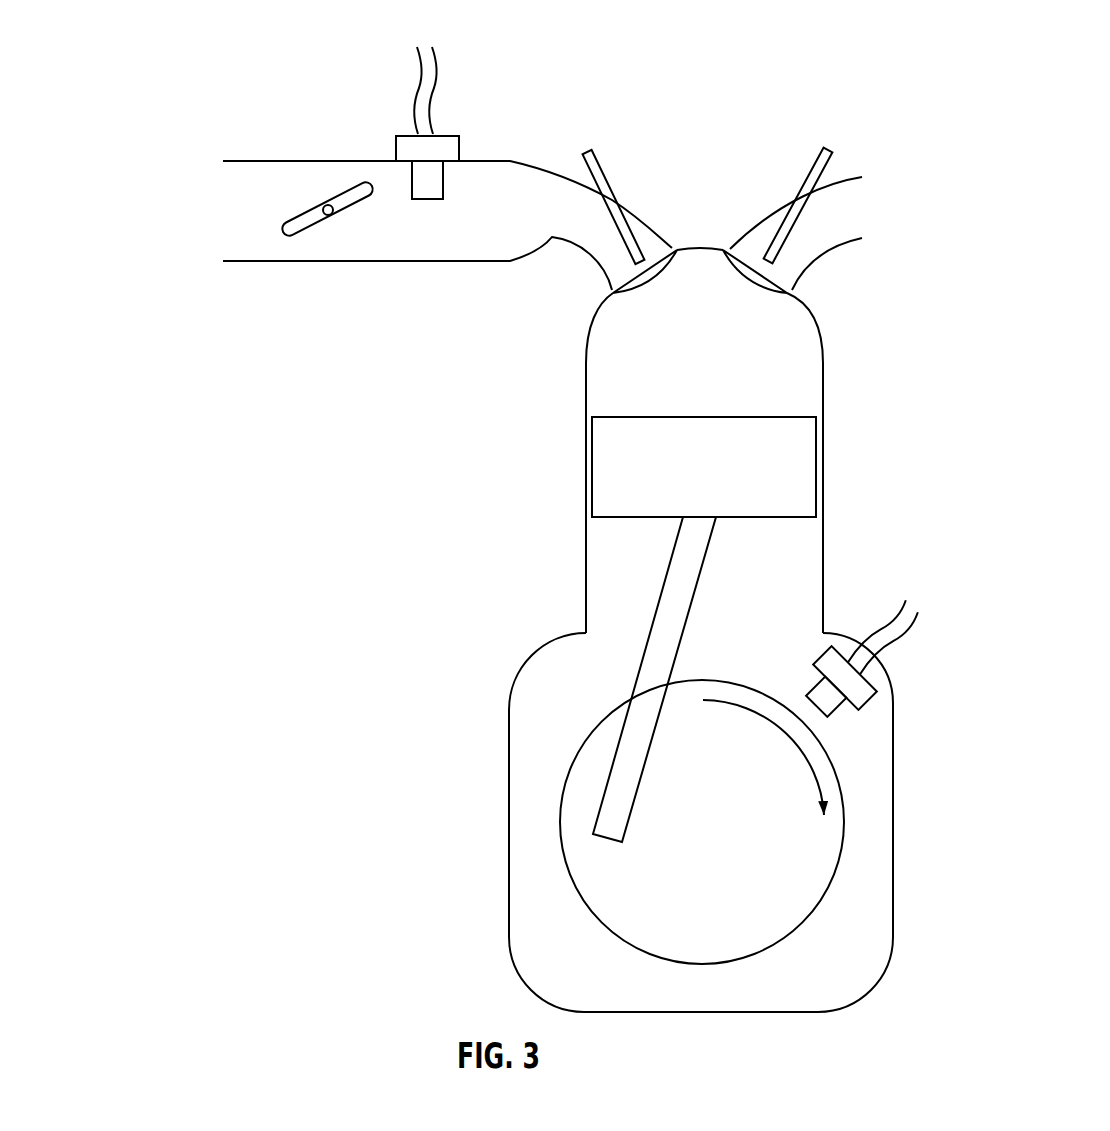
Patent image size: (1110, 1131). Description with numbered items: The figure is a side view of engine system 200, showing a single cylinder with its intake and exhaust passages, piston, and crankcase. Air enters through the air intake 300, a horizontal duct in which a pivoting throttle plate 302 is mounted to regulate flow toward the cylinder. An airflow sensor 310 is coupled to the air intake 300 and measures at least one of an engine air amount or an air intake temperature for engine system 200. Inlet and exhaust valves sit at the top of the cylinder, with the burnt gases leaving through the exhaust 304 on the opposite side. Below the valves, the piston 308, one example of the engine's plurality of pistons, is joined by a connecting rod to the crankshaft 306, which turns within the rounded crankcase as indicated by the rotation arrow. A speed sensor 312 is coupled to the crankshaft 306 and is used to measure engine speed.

The air intake 300 is at (167, 120).
The engine system 200 is at (692, 107).
The throttle plate 302 is at (315, 236).
The exhaust 304 is at (858, 205).
The crankshaft 306 is at (723, 841).
The piston 308 is at (790, 480).
The airflow sensor 310 is at (438, 105).
The speed sensor 312 is at (872, 705).